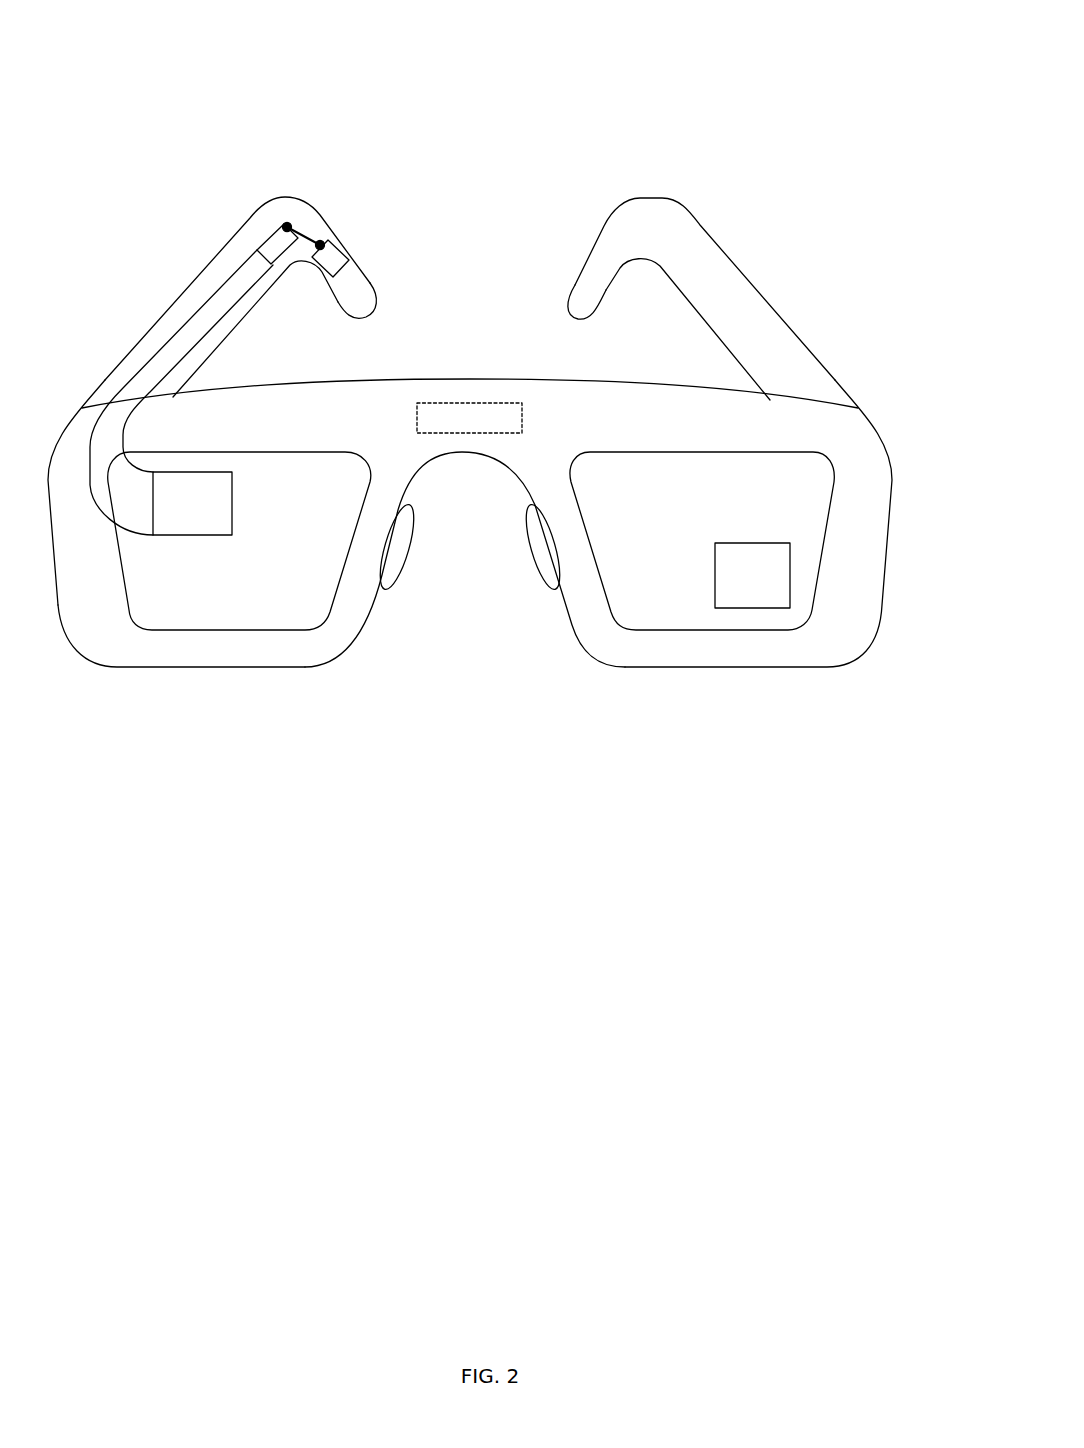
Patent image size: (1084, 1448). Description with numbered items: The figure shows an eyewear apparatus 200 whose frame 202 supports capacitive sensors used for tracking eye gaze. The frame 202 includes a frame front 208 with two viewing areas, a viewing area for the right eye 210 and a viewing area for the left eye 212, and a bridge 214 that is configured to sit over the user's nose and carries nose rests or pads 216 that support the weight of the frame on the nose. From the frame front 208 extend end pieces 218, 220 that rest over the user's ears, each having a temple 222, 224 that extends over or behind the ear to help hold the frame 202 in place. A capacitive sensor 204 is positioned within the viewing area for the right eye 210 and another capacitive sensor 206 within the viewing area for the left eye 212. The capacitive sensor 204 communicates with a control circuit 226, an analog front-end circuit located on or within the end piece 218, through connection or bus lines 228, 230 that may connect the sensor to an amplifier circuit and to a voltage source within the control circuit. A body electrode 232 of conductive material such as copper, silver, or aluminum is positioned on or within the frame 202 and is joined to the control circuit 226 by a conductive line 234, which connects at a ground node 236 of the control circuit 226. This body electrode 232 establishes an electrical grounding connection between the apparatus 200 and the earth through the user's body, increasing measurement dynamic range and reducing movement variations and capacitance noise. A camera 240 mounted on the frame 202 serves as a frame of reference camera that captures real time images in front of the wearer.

The apparatus 200 is at (617, 52).
The frame 202 is at (893, 443).
The capacitive sensor 204 is at (192, 503).
The capacitive sensor 206 is at (752, 575).
The frame front 208 is at (200, 653).
The viewing area for the right eye 210 is at (297, 597).
The viewing area for the left eye 212 is at (653, 593).
The bridge 214 is at (430, 453).
The nose rests or pads 216 is at (410, 560).
The end piece 218 is at (190, 297).
The end piece 220 is at (822, 366).
The temple 222 is at (358, 297).
The temple 224 is at (581, 303).
The control circuit 226 is at (266, 244).
The connection or bus line 228 is at (153, 346).
The connection or bus line 230 is at (230, 307).
The body electrode 232 is at (342, 246).
The conductive line 234 is at (304, 227).
The ground node 236 is at (287, 222).
The camera 240 is at (460, 402).